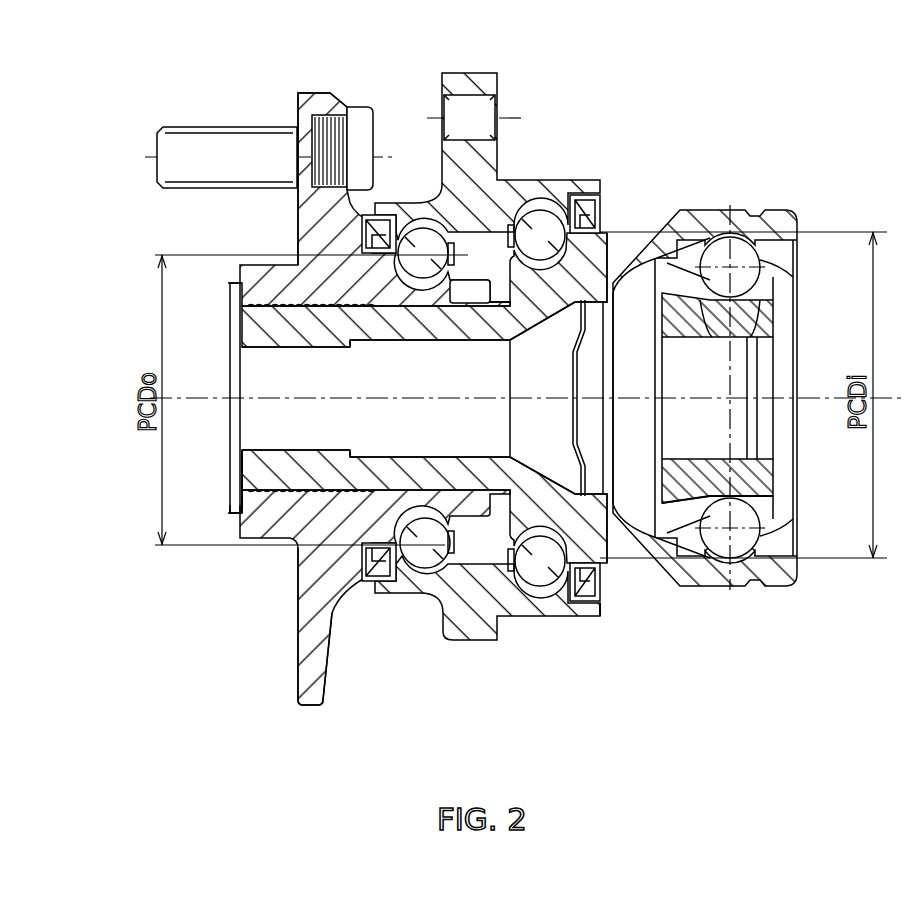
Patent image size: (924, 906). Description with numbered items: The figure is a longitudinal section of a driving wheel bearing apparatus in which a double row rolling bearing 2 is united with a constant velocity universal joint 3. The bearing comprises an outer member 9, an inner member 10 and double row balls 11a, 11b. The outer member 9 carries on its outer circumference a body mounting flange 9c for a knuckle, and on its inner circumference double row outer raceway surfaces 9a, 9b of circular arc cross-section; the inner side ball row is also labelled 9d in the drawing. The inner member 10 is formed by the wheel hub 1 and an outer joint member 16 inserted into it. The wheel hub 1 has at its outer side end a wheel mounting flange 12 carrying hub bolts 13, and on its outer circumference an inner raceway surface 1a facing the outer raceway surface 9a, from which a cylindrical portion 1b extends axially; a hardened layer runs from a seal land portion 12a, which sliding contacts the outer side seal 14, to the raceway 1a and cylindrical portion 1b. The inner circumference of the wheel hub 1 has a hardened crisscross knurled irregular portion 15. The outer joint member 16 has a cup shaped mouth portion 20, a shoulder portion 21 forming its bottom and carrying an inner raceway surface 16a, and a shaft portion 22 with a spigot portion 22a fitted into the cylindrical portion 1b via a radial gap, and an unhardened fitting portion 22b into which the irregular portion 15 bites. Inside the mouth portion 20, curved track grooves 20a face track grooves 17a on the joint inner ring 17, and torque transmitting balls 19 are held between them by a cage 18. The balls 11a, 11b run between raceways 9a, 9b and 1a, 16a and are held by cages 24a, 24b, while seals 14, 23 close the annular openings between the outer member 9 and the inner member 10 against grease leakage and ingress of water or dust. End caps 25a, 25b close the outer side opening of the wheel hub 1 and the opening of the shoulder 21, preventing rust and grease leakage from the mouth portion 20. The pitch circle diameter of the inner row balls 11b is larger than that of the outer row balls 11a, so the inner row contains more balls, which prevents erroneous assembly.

The wheel hub 1 is at (313, 280).
The inner raceway surface 1a is at (363, 238).
The cylindrical portion 1b is at (462, 270).
The double row rolling bearing 2 is at (385, 361).
The constant velocity universal joint 3 is at (737, 322).
The outer member 9 is at (515, 195).
The outer raceway surface 9a is at (407, 229).
The outer raceway surface 9b is at (575, 215).
The body mounting flange 9c is at (472, 88).
The ball (inboard row) 9d is at (541, 220).
The inner member 10 is at (250, 353).
The ball 11a is at (423, 565).
The ball 11b is at (542, 580).
The wheel mounting flange 12 is at (330, 105).
The seal land portion 12a is at (367, 575).
The hub bolt 13 is at (230, 127).
The outer side seal 14 is at (347, 590).
The irregular portion 15 is at (240, 458).
The outer joint member 16 is at (662, 212).
The inner raceway surface 16a is at (543, 273).
The joint inner ring 17 is at (733, 317).
The track groove 17a is at (757, 498).
The cage 18 is at (763, 267).
The torque transmitting ball 19 is at (790, 232).
The mouth portion 20 is at (770, 222).
The track groove 20a is at (760, 550).
The shoulder portion 21 is at (613, 290).
The shaft portion 22 is at (397, 396).
The spigot portion 22a is at (402, 345).
The fitting portion 22b is at (328, 320).
The inner side seal 23 is at (600, 582).
The cage 24a is at (467, 453).
The cage 24b is at (533, 473).
The end cap 25a is at (227, 498).
The end cap 25b is at (610, 420).